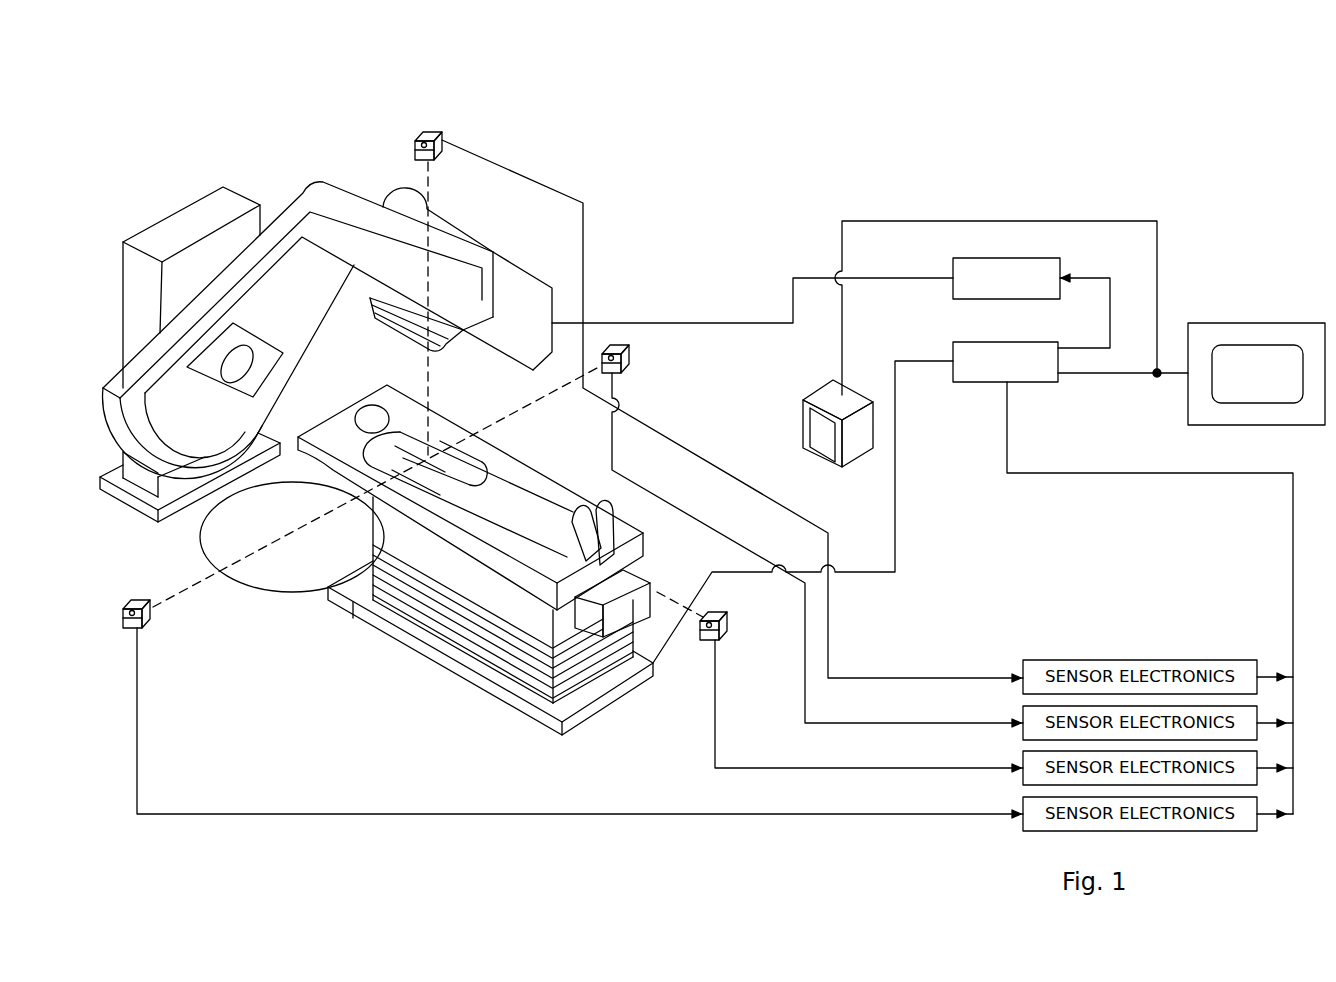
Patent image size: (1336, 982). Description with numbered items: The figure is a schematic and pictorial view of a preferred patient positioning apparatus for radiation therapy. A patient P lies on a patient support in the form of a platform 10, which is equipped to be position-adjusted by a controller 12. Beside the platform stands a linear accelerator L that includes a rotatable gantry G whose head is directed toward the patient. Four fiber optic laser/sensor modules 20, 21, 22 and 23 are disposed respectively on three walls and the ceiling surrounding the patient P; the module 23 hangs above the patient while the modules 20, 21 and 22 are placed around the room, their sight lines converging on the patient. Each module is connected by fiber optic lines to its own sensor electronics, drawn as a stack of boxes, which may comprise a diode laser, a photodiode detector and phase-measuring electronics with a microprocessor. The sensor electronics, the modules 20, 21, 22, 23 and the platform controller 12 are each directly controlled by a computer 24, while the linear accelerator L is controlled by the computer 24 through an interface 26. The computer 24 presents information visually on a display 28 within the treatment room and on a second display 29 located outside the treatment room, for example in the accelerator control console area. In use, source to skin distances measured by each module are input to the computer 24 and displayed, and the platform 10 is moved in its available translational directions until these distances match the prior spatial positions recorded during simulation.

The linear accelerator L is at (260, 197).
The rotatable gantry G is at (345, 197).
The patient P is at (490, 470).
The platform 10 is at (637, 523).
The controller 12 is at (443, 567).
The fiber optic laser/sensor module 20 is at (153, 612).
The fiber optic laser/sensor module 21 is at (630, 352).
The fiber optic laser/sensor module 22 is at (730, 625).
The fiber optic laser/sensor module 23 is at (440, 131).
The computer 24 is at (998, 345).
The interface 26 is at (998, 262).
The display 28 is at (831, 397).
The display 29 is at (1230, 333).